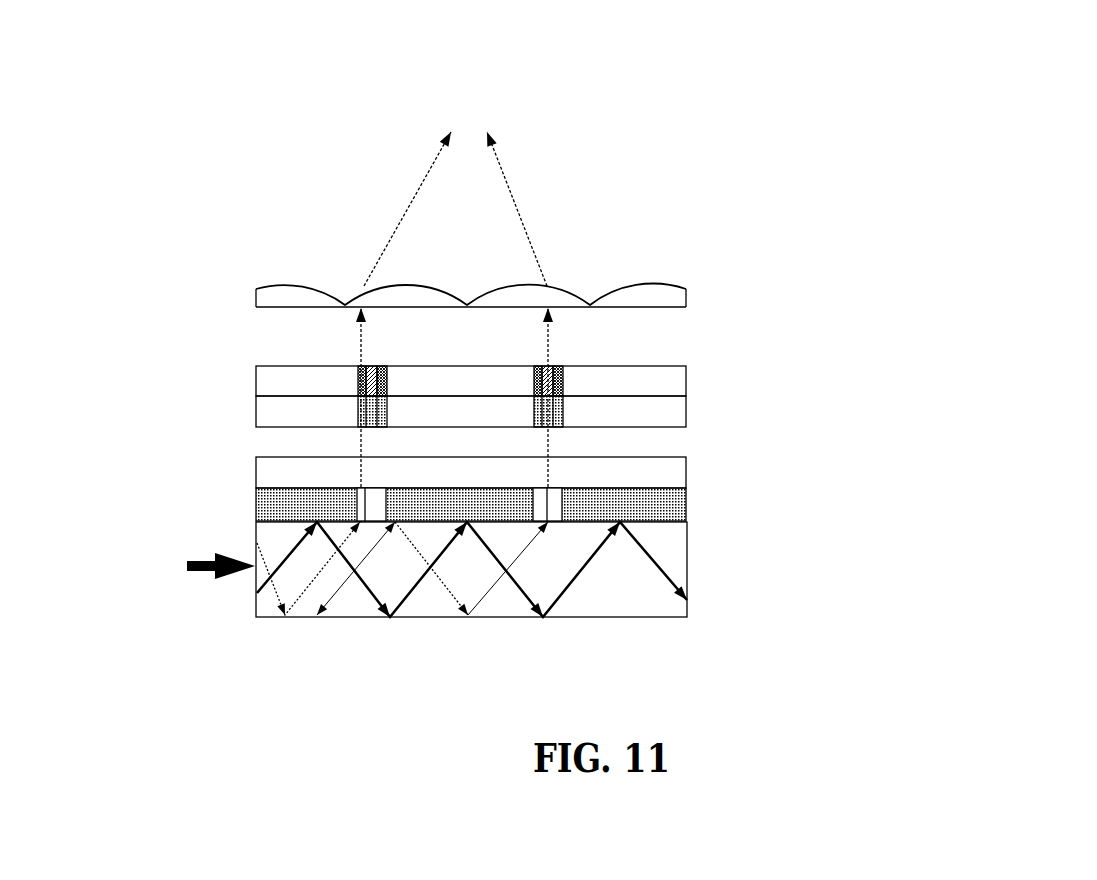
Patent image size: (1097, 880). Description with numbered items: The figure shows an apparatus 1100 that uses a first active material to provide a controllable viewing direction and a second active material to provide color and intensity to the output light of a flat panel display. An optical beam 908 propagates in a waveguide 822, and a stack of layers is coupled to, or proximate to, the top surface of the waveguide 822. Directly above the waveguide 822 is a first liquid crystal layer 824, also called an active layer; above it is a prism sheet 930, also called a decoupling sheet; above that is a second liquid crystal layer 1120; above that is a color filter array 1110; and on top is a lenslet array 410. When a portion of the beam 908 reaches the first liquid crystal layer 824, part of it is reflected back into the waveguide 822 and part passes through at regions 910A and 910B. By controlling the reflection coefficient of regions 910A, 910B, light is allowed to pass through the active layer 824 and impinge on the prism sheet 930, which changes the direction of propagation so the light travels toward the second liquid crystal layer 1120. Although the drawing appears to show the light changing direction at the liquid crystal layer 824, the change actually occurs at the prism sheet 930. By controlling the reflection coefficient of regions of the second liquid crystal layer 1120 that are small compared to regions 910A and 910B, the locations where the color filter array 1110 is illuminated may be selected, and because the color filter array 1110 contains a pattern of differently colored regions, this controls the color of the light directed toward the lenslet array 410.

The apparatus 1100 is at (458, 55).
The lenslet array 410 is at (878, 294).
The color filter array 1110 is at (923, 371).
The second liquid crystal layer 1120 is at (968, 405).
The prism sheet 930 is at (890, 466).
The first liquid crystal layer 824 is at (664, 491).
The waveguide 822 is at (855, 565).
The optical beam 908 is at (170, 553).
The region of first liquid crystal layer 910A is at (378, 498).
The region of first liquid crystal layer 910B is at (559, 498).